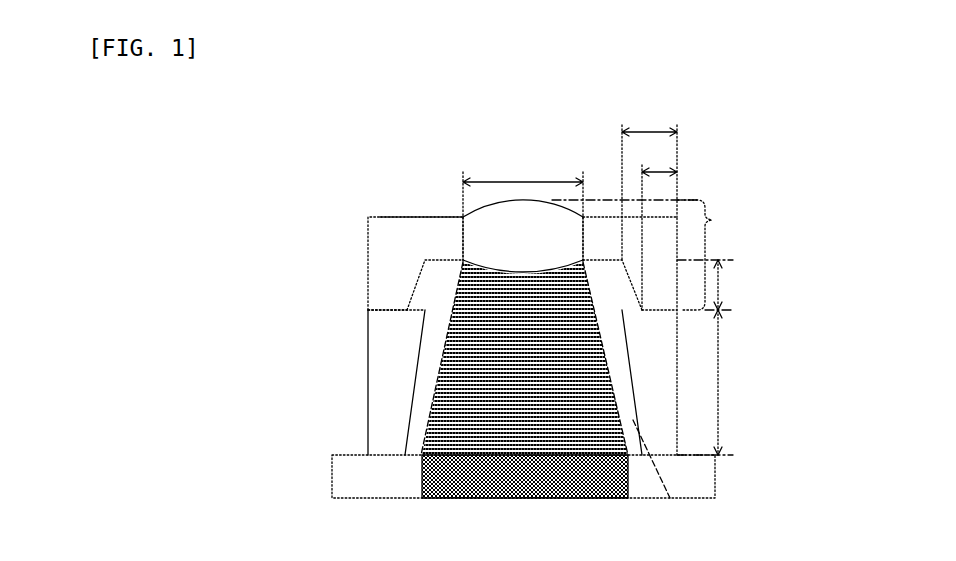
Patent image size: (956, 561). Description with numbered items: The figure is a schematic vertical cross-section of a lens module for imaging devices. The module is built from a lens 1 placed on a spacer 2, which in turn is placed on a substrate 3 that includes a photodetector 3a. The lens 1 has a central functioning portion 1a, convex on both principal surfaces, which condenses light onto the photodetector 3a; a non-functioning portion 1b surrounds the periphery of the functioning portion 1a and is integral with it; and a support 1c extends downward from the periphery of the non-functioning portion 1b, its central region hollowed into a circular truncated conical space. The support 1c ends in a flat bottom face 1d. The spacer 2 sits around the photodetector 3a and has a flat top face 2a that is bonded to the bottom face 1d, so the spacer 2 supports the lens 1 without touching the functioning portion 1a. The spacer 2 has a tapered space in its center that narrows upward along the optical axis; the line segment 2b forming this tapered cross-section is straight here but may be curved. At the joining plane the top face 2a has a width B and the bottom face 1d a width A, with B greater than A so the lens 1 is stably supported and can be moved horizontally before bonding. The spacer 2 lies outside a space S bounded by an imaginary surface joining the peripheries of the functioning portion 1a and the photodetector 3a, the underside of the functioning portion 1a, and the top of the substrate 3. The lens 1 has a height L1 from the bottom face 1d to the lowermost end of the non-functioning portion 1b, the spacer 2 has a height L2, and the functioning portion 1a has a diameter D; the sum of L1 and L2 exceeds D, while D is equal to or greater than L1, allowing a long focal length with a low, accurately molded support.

The lens 1 is at (554, 327).
The functioning portion 1a is at (475, 218).
The non-functioning portion 1b is at (410, 223).
The support 1c is at (377, 285).
The bottom face 1d is at (378, 312).
The spacer 2 is at (378, 385).
The top face 2a is at (412, 305).
The line segment 2b is at (672, 503).
The substrate 3 is at (702, 490).
The photodetector 3a is at (572, 487).
The space S is at (427, 445).
The diameter D is at (523, 208).
The width A is at (659, 225).
The width B is at (649, 180).
The height L1 is at (653, 255).
The height L2 is at (715, 382).